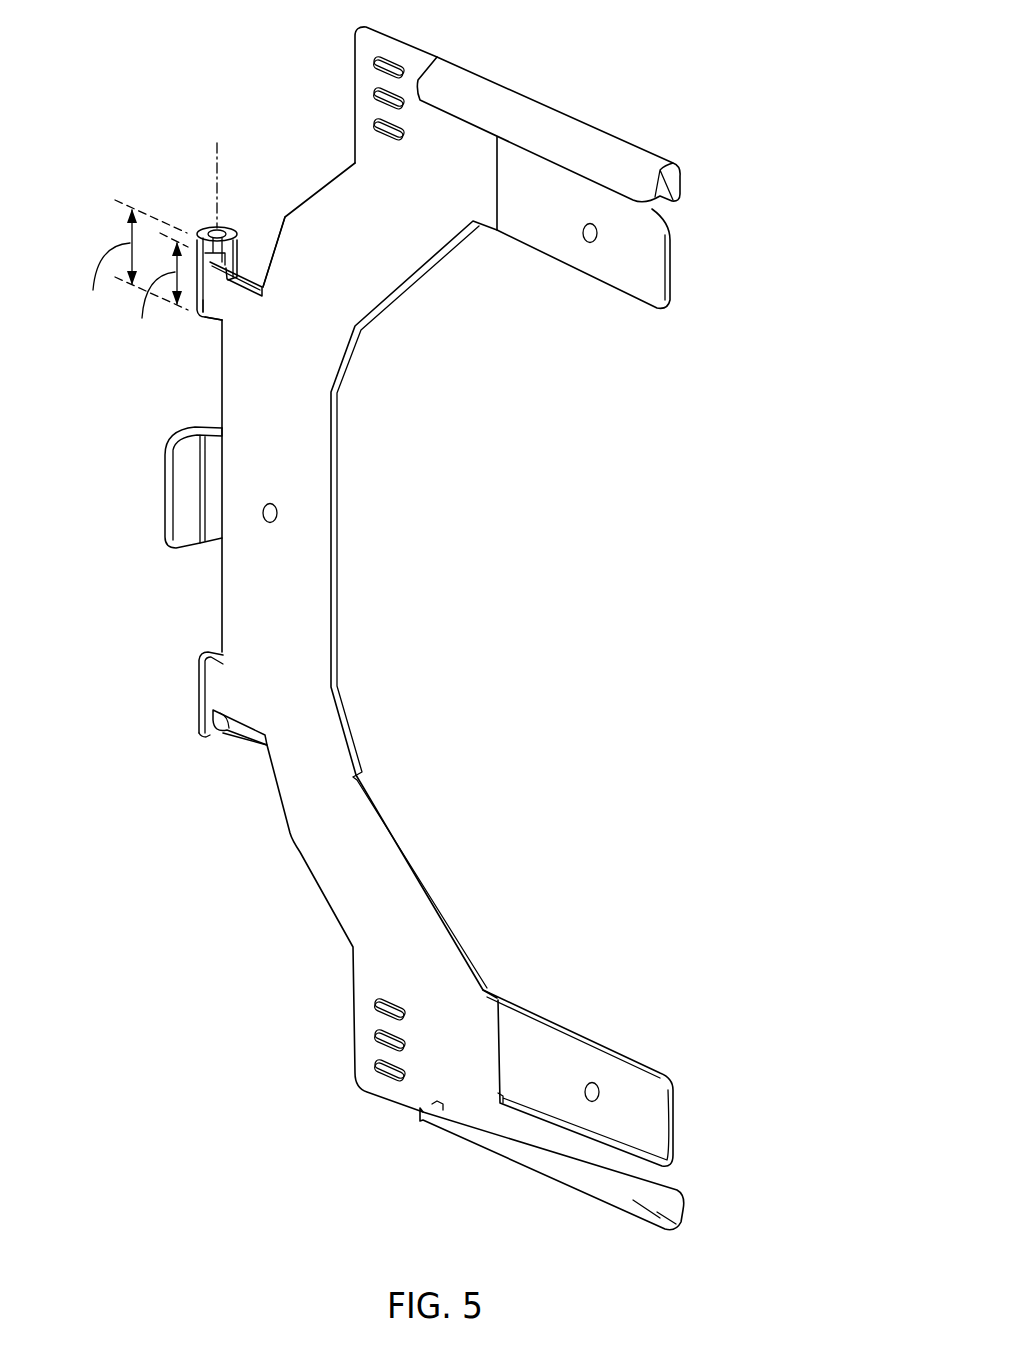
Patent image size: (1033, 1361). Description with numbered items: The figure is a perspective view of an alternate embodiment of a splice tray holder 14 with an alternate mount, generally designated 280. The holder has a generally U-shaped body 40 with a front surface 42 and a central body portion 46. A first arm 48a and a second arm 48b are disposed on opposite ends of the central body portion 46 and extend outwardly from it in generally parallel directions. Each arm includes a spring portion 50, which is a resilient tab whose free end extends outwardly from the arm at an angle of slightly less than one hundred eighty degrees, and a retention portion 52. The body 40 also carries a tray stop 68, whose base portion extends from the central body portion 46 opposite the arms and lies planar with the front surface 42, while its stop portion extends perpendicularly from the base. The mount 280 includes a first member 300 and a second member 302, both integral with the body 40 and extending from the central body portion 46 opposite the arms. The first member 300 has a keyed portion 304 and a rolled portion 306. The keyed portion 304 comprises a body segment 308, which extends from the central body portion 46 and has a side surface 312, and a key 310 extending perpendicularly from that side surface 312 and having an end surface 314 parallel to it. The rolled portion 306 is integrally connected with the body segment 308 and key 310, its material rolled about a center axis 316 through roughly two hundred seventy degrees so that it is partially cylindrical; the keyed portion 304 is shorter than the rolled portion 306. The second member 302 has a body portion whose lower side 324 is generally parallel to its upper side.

The splice tray holder 14 is at (743, 284).
The body 40 is at (347, 582).
The front surface 42 is at (270, 537).
The central body portion 46 is at (290, 628).
The first arm 48a is at (483, 262).
The second arm 48b is at (494, 958).
The spring portion 50 is at (648, 1036).
The retention portion 52 is at (574, 1206).
The tray stop 68 is at (195, 570).
The mount 280 is at (158, 193).
The first member 300 is at (247, 221).
The second member 302 is at (192, 701).
The keyed portion 304 is at (217, 314).
The rolled portion 306 is at (224, 228).
The body segment 308 is at (222, 298).
The key 310 is at (222, 276).
The side surface 312 is at (263, 284).
The end surface 314 is at (227, 258).
The center axis 316 is at (213, 160).
The lower side 324 is at (212, 736).